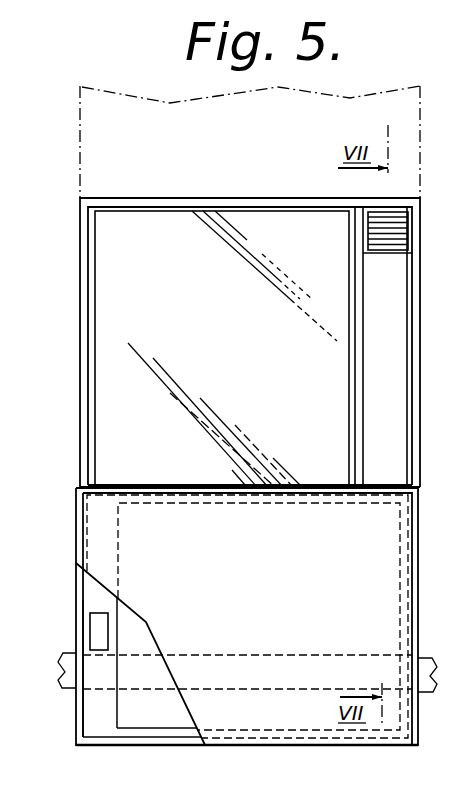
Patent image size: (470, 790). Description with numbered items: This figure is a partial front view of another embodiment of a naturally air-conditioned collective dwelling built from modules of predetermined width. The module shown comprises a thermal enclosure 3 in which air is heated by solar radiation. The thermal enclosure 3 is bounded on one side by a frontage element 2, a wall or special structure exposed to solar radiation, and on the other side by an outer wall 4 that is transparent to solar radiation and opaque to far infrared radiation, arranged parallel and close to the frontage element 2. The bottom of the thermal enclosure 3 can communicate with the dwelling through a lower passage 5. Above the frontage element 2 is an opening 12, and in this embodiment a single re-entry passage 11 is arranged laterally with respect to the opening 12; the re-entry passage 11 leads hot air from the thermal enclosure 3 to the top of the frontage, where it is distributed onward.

The opening 12 is at (247, 357).
The re-entry passage 11 is at (388, 353).
The outer wall 4 is at (357, 564).
The lower passage 5 is at (98, 623).
The thermal enclosure 3 is at (107, 725).
The frontage element 2 is at (155, 725).